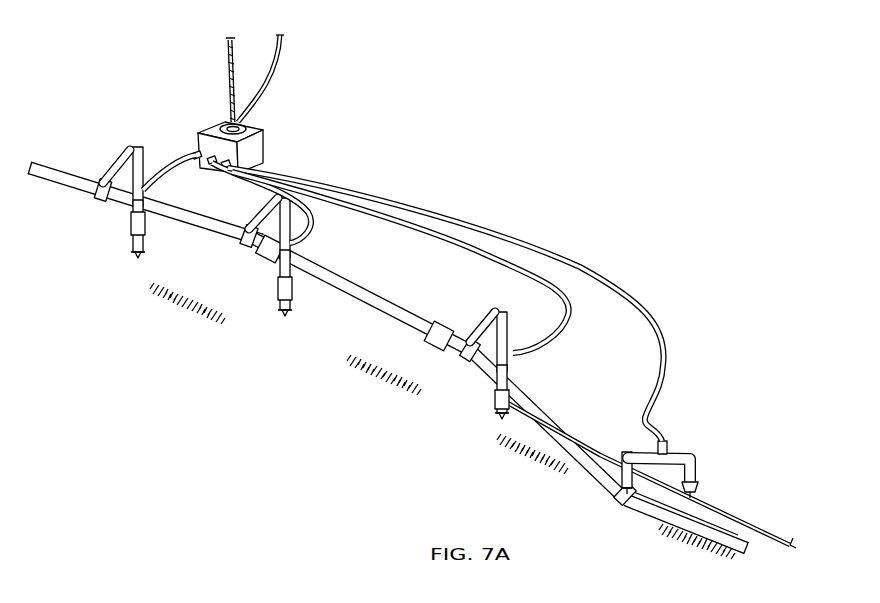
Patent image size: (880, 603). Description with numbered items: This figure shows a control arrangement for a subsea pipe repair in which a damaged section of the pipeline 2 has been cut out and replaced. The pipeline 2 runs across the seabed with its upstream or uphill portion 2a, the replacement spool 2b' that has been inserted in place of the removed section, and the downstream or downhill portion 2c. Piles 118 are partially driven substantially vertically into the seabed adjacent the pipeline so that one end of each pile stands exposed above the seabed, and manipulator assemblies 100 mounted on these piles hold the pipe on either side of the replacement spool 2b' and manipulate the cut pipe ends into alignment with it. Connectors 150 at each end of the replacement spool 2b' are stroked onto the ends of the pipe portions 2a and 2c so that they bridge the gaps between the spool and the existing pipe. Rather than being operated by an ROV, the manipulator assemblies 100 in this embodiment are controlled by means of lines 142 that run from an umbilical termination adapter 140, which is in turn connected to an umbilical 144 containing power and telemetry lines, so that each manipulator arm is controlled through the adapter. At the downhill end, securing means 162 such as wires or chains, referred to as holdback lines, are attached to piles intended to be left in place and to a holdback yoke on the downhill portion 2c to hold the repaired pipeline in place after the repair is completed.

The pipeline 2 is at (553, 412).
The pipeline portion upstream of the damaged section 2a is at (180, 218).
The replacement spool 2b' is at (360, 293).
The pipeline portion downstream of the damaged section 2c is at (595, 467).
The manipulator assembly 100 is at (115, 161).
The pile 118 is at (292, 300).
The umbilical termination adapter 140 is at (258, 140).
The lines 142 is at (373, 192).
The umbilical 144 is at (265, 82).
The connector 150 is at (273, 270).
The securing means 162 is at (610, 460).